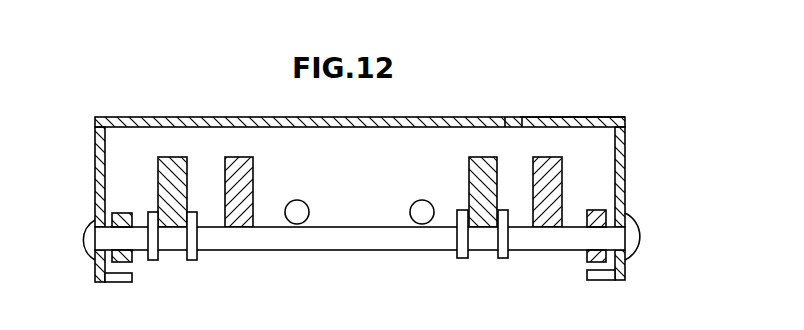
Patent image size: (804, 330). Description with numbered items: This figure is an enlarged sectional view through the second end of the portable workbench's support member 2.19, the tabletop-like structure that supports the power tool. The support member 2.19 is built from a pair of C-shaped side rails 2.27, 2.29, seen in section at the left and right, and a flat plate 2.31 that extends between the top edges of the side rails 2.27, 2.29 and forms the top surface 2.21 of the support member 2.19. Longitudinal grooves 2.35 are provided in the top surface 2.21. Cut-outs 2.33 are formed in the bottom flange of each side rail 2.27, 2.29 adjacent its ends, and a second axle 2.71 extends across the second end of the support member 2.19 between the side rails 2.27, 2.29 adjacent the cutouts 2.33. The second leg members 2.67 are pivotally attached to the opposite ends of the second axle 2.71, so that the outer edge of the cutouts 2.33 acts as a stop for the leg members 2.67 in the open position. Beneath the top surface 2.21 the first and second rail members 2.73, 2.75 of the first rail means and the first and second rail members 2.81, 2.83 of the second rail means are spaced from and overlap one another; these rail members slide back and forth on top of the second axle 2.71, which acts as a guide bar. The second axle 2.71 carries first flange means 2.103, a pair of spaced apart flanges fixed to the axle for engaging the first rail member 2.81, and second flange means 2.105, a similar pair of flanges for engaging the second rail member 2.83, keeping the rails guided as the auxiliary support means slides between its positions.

The support member 2.19 is at (549, 111).
The top surface 2.21 is at (525, 115).
The C-shaped side rail 2.29 is at (95, 186).
The C-shaped side rail 2.27 is at (690, 193).
The flat plate 2.31 is at (366, 122).
The longitudinal grooves 2.35 is at (200, 123).
The first rail member 2.73 is at (552, 172).
The second rail member 2.75 is at (238, 162).
The first rail member 2.81 is at (477, 160).
The second rail member 2.83 is at (171, 162).
The second axle 2.71 is at (348, 238).
The first flange means 2.103 is at (500, 259).
The second flange means 2.105 is at (158, 258).
The second leg members 2.67 is at (131, 261).
The cut-outs 2.33 is at (118, 279).